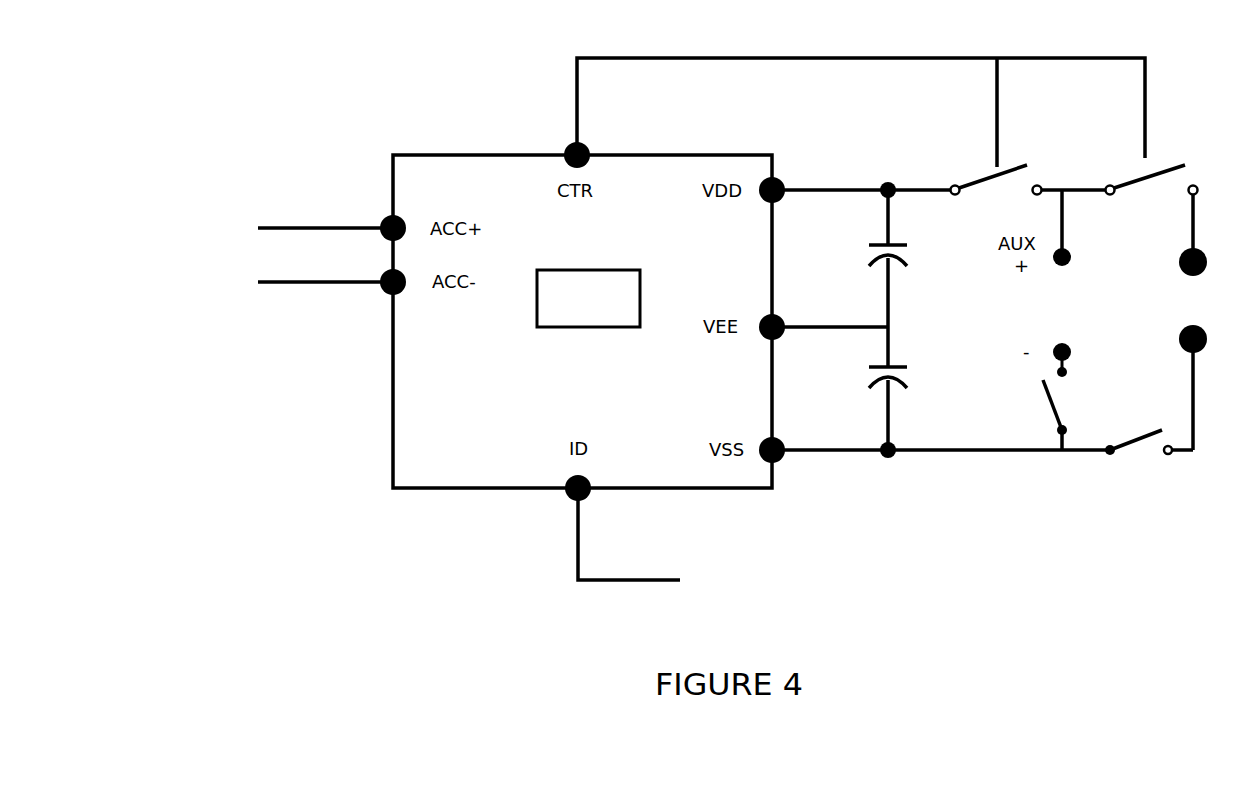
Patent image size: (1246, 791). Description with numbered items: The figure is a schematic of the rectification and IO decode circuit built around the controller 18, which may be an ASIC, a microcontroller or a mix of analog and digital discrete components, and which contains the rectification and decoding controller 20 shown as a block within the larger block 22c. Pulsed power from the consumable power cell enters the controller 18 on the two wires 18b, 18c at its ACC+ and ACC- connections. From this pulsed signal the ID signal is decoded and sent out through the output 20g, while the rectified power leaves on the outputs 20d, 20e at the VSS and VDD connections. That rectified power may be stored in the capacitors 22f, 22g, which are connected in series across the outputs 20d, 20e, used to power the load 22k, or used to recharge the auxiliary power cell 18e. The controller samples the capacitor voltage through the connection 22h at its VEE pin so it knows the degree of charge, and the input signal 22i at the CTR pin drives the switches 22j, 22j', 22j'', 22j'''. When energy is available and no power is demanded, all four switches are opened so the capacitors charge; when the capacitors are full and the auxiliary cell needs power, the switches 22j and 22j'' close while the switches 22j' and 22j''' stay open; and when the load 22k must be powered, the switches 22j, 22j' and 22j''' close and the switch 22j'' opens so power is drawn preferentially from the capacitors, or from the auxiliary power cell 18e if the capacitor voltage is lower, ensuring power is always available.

The controller 18 is at (338, 517).
The wire 18b is at (292, 229).
The wire 18c is at (292, 283).
The auxiliary power cell 18e is at (1057, 275).
The rectification and decoding controller 20 is at (588, 298).
The output 20d is at (941, 440).
The output 20e is at (863, 180).
The output 20g is at (657, 540).
The accessory circuit block 22c is at (582, 321).
The capacitor 22f is at (910, 258).
The capacitor 22g is at (911, 388).
The voltage measurement connection 22h is at (830, 309).
The input signal 22i is at (861, 95).
The switch 22j is at (996, 163).
The switch 22j' is at (1119, 163).
The switch 22j'' is at (1077, 401).
The switch 22j''' is at (1149, 458).
The load 22k is at (1194, 322).